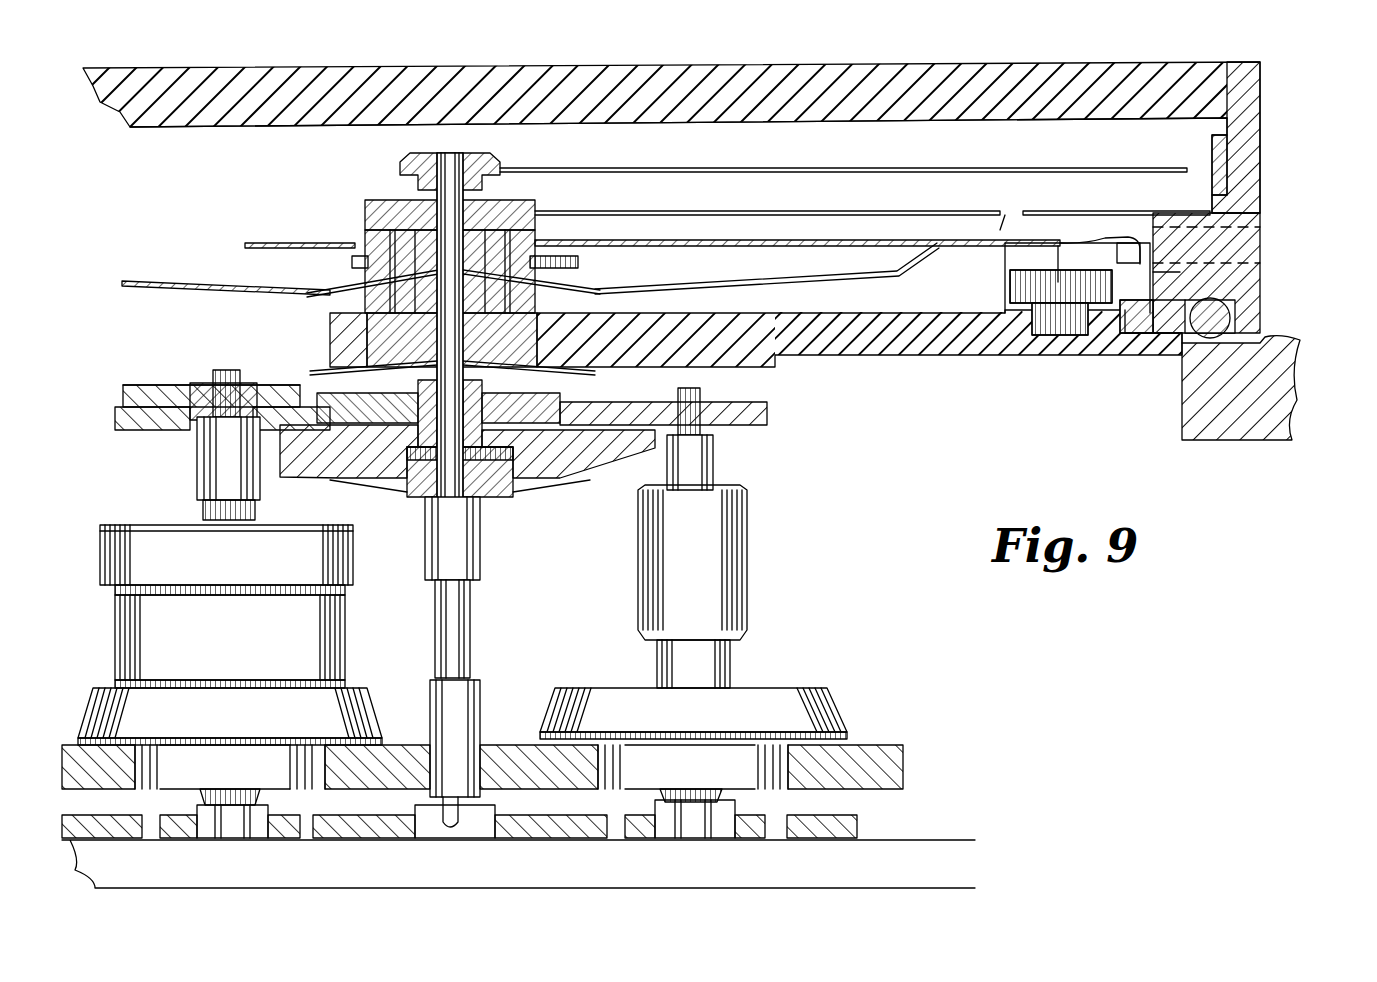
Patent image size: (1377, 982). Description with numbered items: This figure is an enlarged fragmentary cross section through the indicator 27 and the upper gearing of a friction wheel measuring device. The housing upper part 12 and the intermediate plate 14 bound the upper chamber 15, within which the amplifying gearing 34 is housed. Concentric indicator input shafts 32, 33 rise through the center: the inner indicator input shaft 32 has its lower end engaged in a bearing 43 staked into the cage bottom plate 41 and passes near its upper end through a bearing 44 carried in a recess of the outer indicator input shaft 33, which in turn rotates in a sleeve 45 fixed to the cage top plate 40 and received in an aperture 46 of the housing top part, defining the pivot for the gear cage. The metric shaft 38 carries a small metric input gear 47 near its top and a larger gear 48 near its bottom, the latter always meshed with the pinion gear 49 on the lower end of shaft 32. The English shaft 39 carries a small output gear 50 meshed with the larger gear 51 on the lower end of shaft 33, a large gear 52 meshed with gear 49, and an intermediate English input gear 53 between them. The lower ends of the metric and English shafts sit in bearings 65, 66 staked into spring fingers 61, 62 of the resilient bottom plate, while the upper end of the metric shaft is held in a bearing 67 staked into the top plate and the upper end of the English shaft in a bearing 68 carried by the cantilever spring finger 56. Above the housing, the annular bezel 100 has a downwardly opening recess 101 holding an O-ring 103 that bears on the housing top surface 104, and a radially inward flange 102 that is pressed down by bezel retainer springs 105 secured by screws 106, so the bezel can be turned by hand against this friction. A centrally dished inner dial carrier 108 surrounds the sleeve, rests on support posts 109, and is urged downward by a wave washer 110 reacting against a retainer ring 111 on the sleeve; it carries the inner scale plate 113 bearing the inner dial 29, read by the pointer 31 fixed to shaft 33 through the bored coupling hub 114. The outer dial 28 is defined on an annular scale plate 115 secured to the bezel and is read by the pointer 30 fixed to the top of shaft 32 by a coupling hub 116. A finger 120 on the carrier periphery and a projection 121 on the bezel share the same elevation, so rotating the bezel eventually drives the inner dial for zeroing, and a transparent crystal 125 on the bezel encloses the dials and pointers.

The housing upper part 12 is at (962, 347).
The intermediate plate 14 is at (832, 864).
The upper chamber 15 is at (1030, 460).
The indicator 27 is at (1132, 28).
The outer dial 28 is at (1066, 210).
The inner dial 29 is at (1000, 240).
The pointer 30 is at (880, 168).
The pointer 31 is at (866, 210).
The inner indicator input shaft 32 is at (466, 642).
The outer indicator input shaft 33 is at (372, 240).
The amplifying gearing 34 is at (800, 492).
The metric shaft 38 is at (727, 662).
The English shaft 39 is at (335, 636).
The cage top plate 40 is at (140, 427).
The cage bottom plate 41 is at (858, 824).
The bearing 43 is at (472, 806).
The bearing 44 is at (482, 500).
The sleeve 45 is at (330, 330).
The aperture 46 is at (536, 325).
The metric input gear 47 is at (748, 524).
The gear 48 is at (905, 760).
The pinion gear 49 is at (483, 705).
The output gear 50 is at (215, 470).
The gear 51 is at (622, 482).
The gear 52 is at (378, 740).
The English input gear 53 is at (110, 530).
The cantilever spring finger 56 is at (178, 385).
The spring finger 61 is at (292, 840).
The spring finger 62 is at (748, 836).
The bearing 65 is at (205, 806).
The bearing 66 is at (712, 802).
The bearing 67 is at (715, 438).
The bearing 68 is at (203, 372).
The annular bezel 100 is at (1236, 212).
The recess 101 is at (1236, 300).
The flange 102 is at (1160, 340).
The O-ring 103 is at (1232, 324).
The top surface 104 is at (1302, 338).
The bezel retainer spring 105 is at (1130, 335).
The screw 106 is at (1010, 287).
The inner dial carrier 108 is at (832, 283).
The support post 109 is at (1000, 265).
The wave washer 110 is at (578, 280).
The retainer ring 111 is at (350, 262).
The inner scale plate 113 is at (748, 248).
The coupling hub 114 is at (525, 205).
The annular scale plate 115 is at (1176, 212).
The coupling hub 116 is at (496, 158).
The finger 120 is at (1110, 240).
The projection 121 is at (1240, 266).
The transparent crystal 125 is at (772, 30).